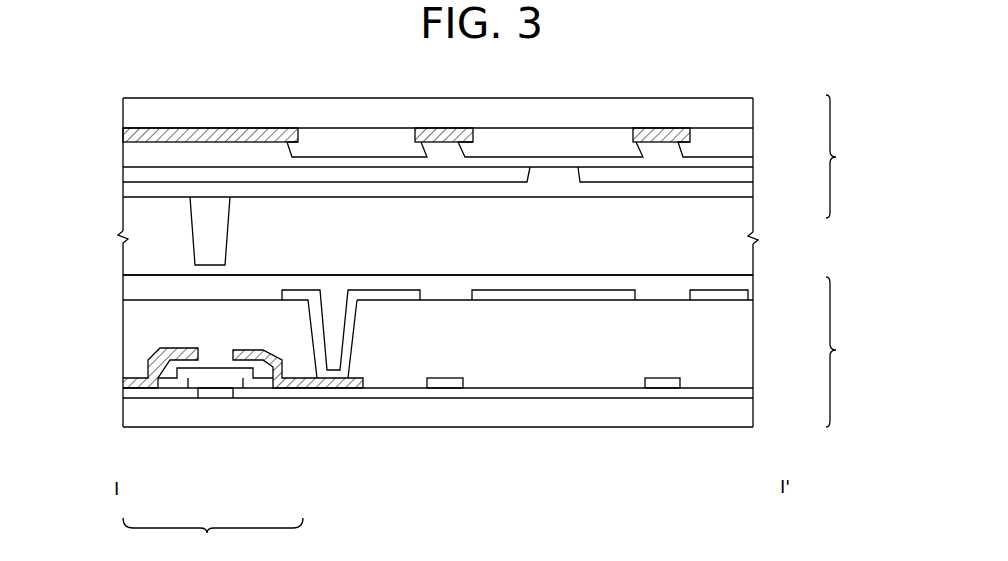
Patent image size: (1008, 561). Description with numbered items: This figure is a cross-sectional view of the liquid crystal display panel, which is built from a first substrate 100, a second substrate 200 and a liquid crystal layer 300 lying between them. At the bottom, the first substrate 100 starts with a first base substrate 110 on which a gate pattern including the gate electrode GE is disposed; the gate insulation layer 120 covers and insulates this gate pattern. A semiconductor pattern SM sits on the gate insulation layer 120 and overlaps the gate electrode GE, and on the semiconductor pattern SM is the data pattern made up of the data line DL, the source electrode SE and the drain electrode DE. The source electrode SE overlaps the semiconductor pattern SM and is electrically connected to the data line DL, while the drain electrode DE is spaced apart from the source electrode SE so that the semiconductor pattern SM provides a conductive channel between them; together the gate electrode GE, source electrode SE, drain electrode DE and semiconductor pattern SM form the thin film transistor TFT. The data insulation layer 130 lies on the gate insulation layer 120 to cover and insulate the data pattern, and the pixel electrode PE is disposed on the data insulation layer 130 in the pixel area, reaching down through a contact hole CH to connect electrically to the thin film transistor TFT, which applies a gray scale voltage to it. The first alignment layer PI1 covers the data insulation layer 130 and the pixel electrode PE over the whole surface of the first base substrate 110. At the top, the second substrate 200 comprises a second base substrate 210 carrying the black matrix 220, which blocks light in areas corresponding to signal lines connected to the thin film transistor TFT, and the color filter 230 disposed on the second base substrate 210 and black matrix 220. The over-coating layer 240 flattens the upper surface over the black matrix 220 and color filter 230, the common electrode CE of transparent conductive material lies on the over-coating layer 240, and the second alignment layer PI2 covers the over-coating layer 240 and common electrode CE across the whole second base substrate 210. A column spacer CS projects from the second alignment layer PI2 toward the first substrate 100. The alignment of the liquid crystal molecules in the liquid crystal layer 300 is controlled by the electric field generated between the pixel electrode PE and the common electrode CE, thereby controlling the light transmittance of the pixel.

The first substrate 100 is at (848, 352).
The first base substrate 110 is at (747, 418).
The gate insulation layer 120 is at (747, 396).
The data insulation layer 130 is at (747, 347).
The first alignment layer PI1 is at (747, 285).
The second substrate 200 is at (848, 156).
The second base substrate 210 is at (747, 111).
The black matrix 220 is at (679, 128).
The color filter 230 is at (747, 143).
The over-coating layer 240 is at (747, 161).
The common electrode CE is at (747, 182).
The second alignment layer PI2 is at (747, 197).
The liquid crystal layer 300 is at (747, 249).
The column spacer CS is at (203, 213).
The contact hole CH is at (338, 305).
The thin film transistor TFT is at (213, 537).
The source electrode SE is at (143, 387).
The semiconductor pattern SM is at (173, 385).
The gate electrode GE is at (217, 396).
The drain electrode DE is at (282, 388).
The pixel electrode PE is at (330, 377).
The data line DL is at (447, 386).